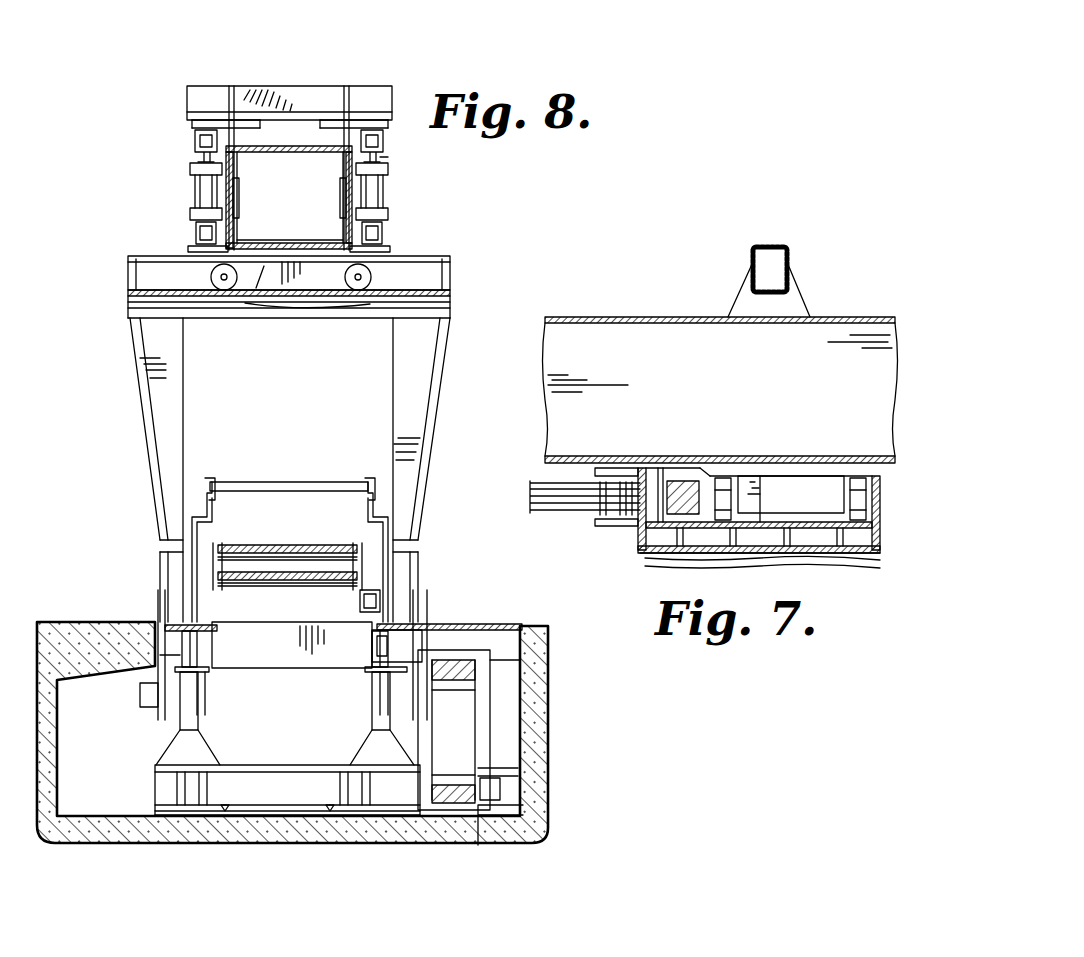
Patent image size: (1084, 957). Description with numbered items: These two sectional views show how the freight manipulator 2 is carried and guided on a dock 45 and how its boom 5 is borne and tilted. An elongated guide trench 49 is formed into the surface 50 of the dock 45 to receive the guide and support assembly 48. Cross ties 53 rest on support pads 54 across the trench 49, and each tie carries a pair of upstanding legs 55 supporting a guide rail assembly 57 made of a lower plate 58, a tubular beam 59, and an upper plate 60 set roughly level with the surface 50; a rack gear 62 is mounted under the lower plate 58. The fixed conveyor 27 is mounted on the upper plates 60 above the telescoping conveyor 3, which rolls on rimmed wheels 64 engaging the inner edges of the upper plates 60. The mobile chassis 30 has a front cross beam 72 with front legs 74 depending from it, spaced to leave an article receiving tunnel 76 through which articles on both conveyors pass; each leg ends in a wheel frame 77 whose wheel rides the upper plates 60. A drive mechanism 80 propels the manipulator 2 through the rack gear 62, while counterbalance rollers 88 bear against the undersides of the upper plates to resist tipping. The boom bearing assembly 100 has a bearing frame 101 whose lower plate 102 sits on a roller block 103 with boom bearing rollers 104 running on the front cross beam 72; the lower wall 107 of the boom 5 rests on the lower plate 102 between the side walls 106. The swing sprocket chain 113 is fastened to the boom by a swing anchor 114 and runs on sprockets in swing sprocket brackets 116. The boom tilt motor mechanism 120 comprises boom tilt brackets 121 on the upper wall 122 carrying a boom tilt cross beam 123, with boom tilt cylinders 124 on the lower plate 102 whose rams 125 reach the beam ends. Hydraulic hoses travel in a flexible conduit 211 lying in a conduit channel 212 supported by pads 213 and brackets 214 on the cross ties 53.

In FIG. 8, the freight manipulator 2 is at (462, 176).
In FIG. 8, the telescoping conveyor 3 is at (278, 540).
In FIG. 8, the boom 5 is at (322, 144).
In FIG. 7, the boom 5 is at (670, 314).
In FIG. 8, the fixed conveyor 27 is at (268, 478).
In FIG. 8, the mobile chassis 30 is at (126, 266).
In FIG. 8, the dock 45 is at (78, 620).
In FIG. 8, the guide and support assembly 48 is at (160, 745).
In FIG. 8, the guide trench 49 is at (116, 815).
In FIG. 8, the surface of the dock 50 is at (44, 620).
In FIG. 8, the cross ties 53 is at (286, 762).
In FIG. 8, the support pads 54 is at (232, 808).
In FIG. 8, the legs 55 is at (199, 716).
In FIG. 8, the guide rail assembly 57 is at (205, 656).
In FIG. 8, the lower plate 58 is at (365, 674).
In FIG. 8, the tubular beam 59 is at (160, 655).
In FIG. 8, the upper plate 60 is at (208, 636).
In FIG. 8, the rack gear 62 is at (380, 690).
In FIG. 8, the rimmed wheels 64 is at (382, 605).
In FIG. 8, the front cross beam 72 is at (450, 292).
In FIG. 7, the front cross beam 72 is at (640, 550).
In FIG. 8, the front legs 74 is at (150, 428).
In FIG. 8, the article receiving tunnel 76 is at (288, 470).
In FIG. 8, the wheel frame 77 is at (410, 568).
In FIG. 8, the drive mechanism 80 is at (140, 708).
In FIG. 8, the counterbalance rollers 88 is at (432, 645).
In FIG. 8, the boom bearing assembly 100 is at (378, 270).
In FIG. 7, the boom bearing assembly 100 is at (810, 556).
In FIG. 8, the bearing frame 101 is at (200, 252).
In FIG. 7, the bearing frame 101 is at (825, 468).
In FIG. 8, the lower plate 102 is at (205, 268).
In FIG. 7, the lower plate 102 is at (798, 473).
In FIG. 8, the roller block 103 is at (318, 296).
In FIG. 7, the roller block 103 is at (791, 494).
In FIG. 8, the boom bearing rollers 104 is at (228, 291).
In FIG. 7, the boom bearing rollers 104 is at (721, 476).
In FIG. 8, the side walls 106 is at (338, 178).
In FIG. 7, the side walls 106 is at (550, 366).
In FIG. 8, the lower wall 107 is at (304, 242).
In FIG. 7, the lower wall 107 is at (552, 455).
In FIG. 7, the swing sprocket chain 113 is at (548, 512).
In FIG. 7, the swing anchor 114 is at (676, 480).
In FIG. 7, the swing sprocket brackets 116 is at (604, 527).
In FIG. 8, the boom tilt motor mechanism 120 is at (388, 204).
In FIG. 8, the boom tilt brackets 121 is at (220, 86).
In FIG. 7, the boom tilt brackets 121 is at (744, 298).
In FIG. 8, the upper wall 122 is at (300, 152).
In FIG. 7, the upper wall 122 is at (624, 328).
In FIG. 8, the boom tilt cross beam 123 is at (262, 90).
In FIG. 7, the boom tilt cross beam 123 is at (790, 280).
In FIG. 8, the boom tilt cylinders 124 is at (195, 192).
In FIG. 8, the rams 125 is at (388, 157).
In FIG. 8, the flexible conduit 211 is at (468, 718).
In FIG. 8, the conduit channel 212 is at (500, 772).
In FIG. 8, the pads 213 is at (500, 826).
In FIG. 8, the brackets 214 is at (499, 787).